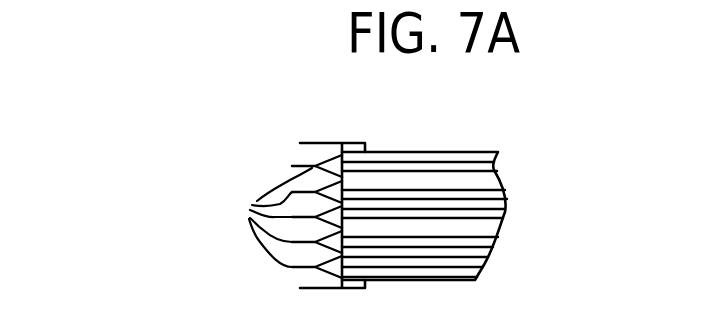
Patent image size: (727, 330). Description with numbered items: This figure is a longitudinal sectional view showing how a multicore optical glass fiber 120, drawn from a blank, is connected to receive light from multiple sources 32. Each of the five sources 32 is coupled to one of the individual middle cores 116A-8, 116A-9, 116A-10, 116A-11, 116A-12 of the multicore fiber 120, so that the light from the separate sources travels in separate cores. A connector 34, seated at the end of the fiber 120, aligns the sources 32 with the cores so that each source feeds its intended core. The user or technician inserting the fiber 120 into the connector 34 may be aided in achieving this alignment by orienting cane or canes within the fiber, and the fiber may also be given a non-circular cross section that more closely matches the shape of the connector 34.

The multiple sources 32 is at (284, 216).
The connector 34 is at (361, 142).
The multicore fiber 120 is at (475, 196).
The middle core 116A-8 is at (495, 164).
The middle core 116A-9 is at (505, 192).
The middle core 116A-10 is at (504, 216).
The middle core 116A-11 is at (493, 240).
The middle core 116A-12 is at (480, 269).